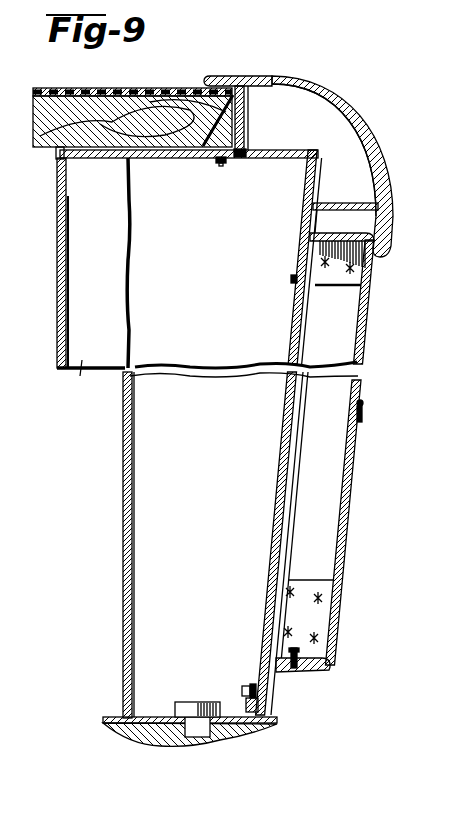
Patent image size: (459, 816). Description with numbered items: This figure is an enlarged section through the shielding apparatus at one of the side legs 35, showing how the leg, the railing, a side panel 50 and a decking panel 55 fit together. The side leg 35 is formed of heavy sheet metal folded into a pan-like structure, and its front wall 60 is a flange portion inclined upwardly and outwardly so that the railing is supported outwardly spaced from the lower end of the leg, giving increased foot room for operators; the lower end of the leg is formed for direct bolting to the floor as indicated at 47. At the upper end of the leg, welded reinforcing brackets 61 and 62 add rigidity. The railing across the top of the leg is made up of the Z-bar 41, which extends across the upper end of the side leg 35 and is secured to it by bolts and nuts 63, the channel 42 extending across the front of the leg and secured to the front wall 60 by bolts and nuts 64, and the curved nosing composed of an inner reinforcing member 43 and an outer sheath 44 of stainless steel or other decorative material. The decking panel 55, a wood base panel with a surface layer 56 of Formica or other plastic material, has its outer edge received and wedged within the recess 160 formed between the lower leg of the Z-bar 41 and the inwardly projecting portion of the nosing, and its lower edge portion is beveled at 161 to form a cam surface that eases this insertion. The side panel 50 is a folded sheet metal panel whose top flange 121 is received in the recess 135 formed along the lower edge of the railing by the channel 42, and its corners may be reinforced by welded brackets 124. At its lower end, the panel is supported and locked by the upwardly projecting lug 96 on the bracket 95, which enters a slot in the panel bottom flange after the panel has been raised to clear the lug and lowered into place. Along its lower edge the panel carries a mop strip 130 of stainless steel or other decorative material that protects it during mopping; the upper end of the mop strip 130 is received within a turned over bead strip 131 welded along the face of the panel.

The side leg 35 is at (128, 407).
The Z-bar 41 is at (247, 108).
The channel 42 is at (342, 203).
The inner reinforcing member 43 is at (343, 103).
The outer sheath 44 is at (322, 88).
The floor bolting 47 is at (200, 730).
The side panel 50 is at (367, 330).
The decking panel 55 is at (122, 112).
The surface layer 56 is at (72, 90).
The front wall 60 is at (290, 420).
The reinforcing bracket 61 is at (67, 180).
The reinforcing bracket 62 is at (303, 187).
The bolts and nuts 63 is at (221, 164).
The bolts and nuts 64 is at (291, 279).
The bracket 95 is at (270, 711).
The lug 96 is at (300, 652).
The top flange 121 is at (352, 237).
The welded bracket 124 is at (358, 280).
The mop strip 130 is at (350, 515).
The bead strip 131 is at (366, 408).
The recess 135 is at (352, 222).
The recess 160 is at (232, 130).
The bevel 161 is at (243, 153).